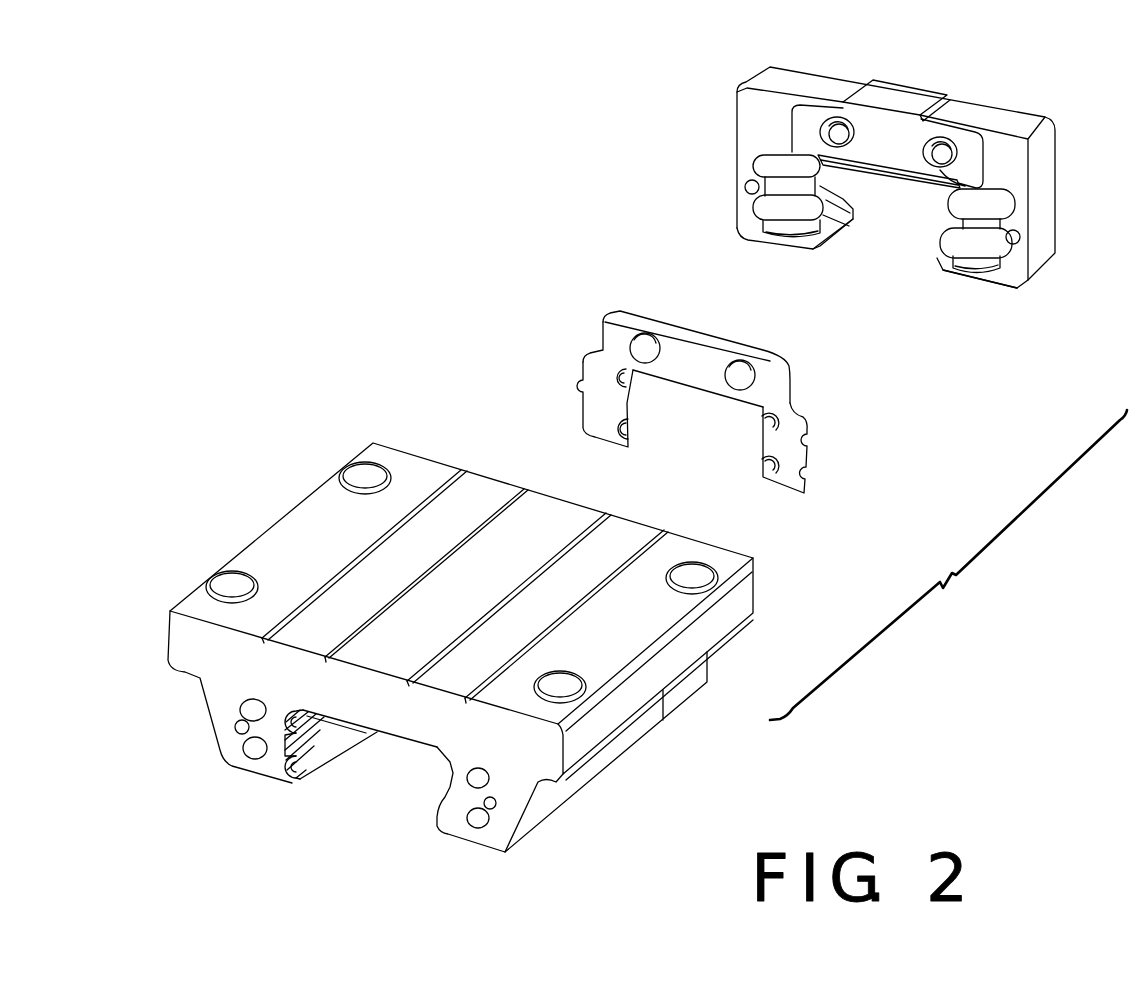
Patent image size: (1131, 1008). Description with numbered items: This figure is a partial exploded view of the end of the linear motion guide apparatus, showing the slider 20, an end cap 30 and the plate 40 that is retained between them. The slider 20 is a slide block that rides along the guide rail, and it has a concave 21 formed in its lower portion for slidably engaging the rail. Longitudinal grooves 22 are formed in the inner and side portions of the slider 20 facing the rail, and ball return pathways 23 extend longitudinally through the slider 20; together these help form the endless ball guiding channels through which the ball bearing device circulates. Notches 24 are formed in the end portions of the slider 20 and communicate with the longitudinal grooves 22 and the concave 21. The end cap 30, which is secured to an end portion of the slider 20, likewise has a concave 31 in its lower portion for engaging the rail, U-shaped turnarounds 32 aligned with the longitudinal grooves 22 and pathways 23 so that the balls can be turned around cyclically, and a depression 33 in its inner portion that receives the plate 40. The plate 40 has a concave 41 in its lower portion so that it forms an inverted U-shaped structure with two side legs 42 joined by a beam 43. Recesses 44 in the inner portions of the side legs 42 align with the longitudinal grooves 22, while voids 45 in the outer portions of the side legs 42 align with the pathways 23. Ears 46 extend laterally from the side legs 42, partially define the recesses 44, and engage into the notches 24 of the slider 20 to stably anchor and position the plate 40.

The slider 20 is at (286, 532).
The concave 21 is at (398, 797).
The longitudinal grooves 22 is at (292, 745).
The ball return pathways 23 is at (480, 782).
The notches 24 is at (287, 714).
The end caps 30 is at (907, 95).
The concave 31 is at (897, 246).
The turnarounds 32 is at (755, 209).
The depression 33 is at (885, 130).
The plate 40 is at (658, 320).
The concave 41 is at (710, 458).
The side legs 42 is at (783, 490).
The beam 43 is at (697, 350).
The recesses 44 is at (627, 392).
The voids 45 is at (806, 442).
The ears 46 is at (610, 386).